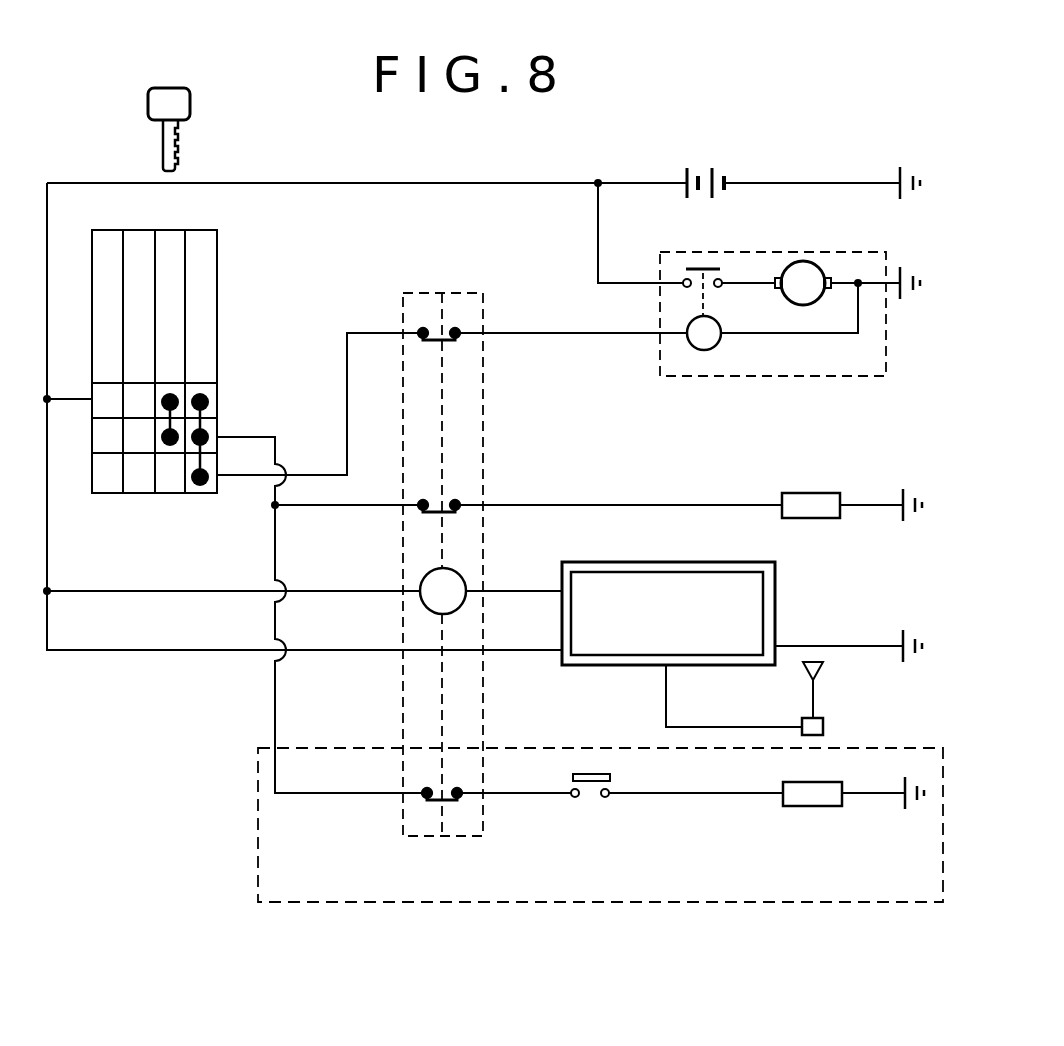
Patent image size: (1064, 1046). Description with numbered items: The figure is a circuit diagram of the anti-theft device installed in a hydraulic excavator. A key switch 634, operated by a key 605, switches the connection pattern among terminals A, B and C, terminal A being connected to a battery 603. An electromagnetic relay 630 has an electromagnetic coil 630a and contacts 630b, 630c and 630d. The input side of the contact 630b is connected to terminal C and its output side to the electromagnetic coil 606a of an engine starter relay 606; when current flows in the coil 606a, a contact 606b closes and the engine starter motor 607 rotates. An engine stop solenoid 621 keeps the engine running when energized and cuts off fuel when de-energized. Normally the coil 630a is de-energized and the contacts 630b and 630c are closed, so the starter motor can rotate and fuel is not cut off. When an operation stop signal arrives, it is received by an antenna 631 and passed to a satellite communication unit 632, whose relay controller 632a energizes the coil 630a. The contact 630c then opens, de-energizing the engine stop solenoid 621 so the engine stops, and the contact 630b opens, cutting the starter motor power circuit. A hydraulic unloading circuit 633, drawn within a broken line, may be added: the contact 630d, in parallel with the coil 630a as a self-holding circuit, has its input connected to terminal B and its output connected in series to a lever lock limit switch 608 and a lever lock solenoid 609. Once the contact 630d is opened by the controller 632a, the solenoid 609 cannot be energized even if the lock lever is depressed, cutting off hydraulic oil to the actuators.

The battery 603 is at (700, 165).
The key 605 is at (193, 98).
The engine starter relay 606 is at (886, 357).
The electromagnetic coil 606a is at (706, 350).
The contact 606b is at (708, 262).
The engine starter motor 607 is at (810, 262).
The lever lock limit switch 608 is at (592, 772).
The lever lock solenoid 609 is at (808, 808).
The engine stop solenoid 621 is at (806, 492).
The electromagnetic relay 630 is at (483, 413).
The electromagnetic coil 630a is at (428, 607).
The contact 630b is at (456, 340).
The contact 630c is at (456, 512).
The contact 630d is at (440, 800).
The antenna 631 is at (823, 694).
The satellite communication unit 632 is at (685, 560).
The relay controller 632a is at (763, 622).
The hydraulic unloading circuit 633 is at (945, 768).
The key switch 634 is at (217, 270).